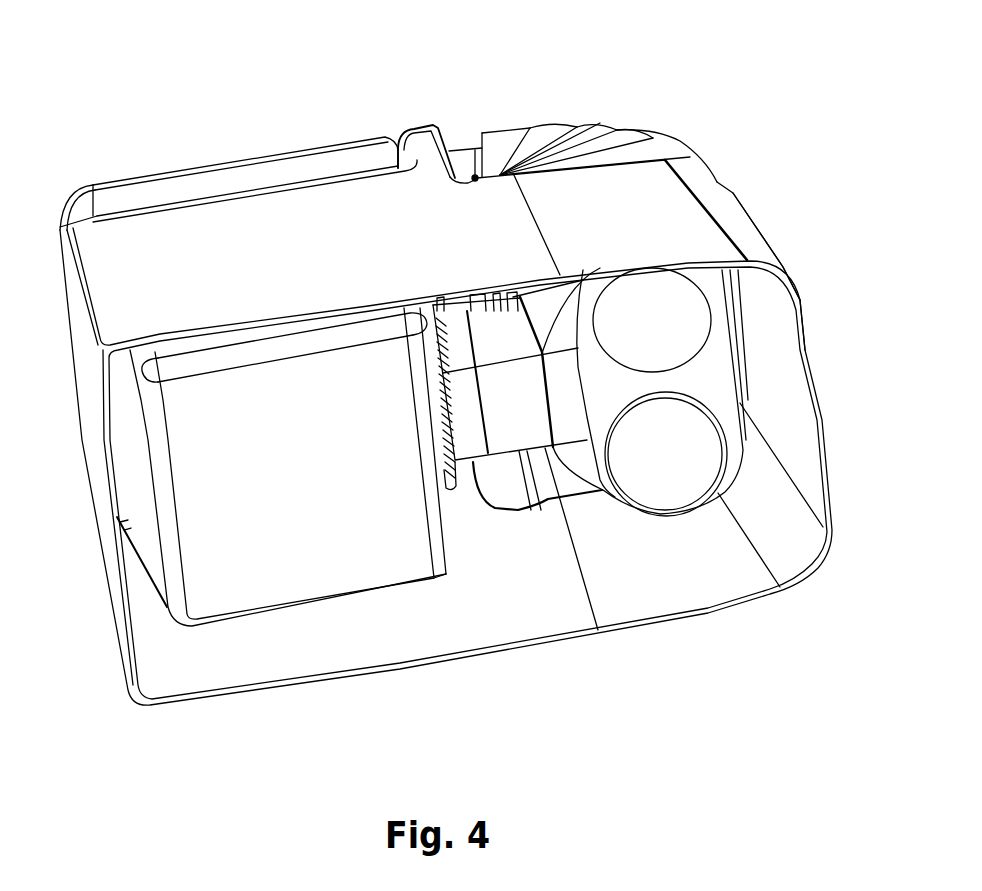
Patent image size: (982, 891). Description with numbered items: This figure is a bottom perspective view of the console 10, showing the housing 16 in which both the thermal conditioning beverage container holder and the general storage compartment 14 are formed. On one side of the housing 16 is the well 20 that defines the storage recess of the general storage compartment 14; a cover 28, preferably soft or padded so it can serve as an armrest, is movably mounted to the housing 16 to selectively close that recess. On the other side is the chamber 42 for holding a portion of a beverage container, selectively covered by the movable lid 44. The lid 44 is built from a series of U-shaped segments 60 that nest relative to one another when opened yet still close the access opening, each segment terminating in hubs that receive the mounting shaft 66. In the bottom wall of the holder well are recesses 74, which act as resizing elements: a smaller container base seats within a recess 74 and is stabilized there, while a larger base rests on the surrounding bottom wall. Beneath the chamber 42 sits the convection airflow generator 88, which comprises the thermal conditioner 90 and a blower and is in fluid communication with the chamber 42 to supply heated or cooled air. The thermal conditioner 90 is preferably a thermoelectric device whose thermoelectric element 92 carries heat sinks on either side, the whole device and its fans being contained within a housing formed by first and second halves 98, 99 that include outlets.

The console 10 is at (170, 95).
The general storage compartment 14 is at (90, 176).
The housing 16 is at (740, 191).
The well 20 is at (256, 628).
The cover 28 is at (134, 164).
The chamber 42 is at (594, 403).
The lid 44 is at (681, 131).
The U-shaped segments 60 is at (457, 143).
The mounting shaft 66 is at (475, 174).
The recesses 74 is at (652, 280).
The convection airflow generator 88 is at (472, 473).
The thermal conditioner 90 is at (523, 478).
The thermoelectric element 92 is at (497, 327).
The first housing half 98 is at (542, 320).
The second housing half 99 is at (452, 332).